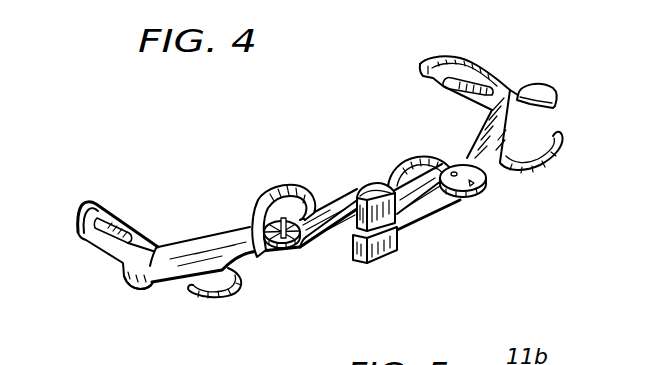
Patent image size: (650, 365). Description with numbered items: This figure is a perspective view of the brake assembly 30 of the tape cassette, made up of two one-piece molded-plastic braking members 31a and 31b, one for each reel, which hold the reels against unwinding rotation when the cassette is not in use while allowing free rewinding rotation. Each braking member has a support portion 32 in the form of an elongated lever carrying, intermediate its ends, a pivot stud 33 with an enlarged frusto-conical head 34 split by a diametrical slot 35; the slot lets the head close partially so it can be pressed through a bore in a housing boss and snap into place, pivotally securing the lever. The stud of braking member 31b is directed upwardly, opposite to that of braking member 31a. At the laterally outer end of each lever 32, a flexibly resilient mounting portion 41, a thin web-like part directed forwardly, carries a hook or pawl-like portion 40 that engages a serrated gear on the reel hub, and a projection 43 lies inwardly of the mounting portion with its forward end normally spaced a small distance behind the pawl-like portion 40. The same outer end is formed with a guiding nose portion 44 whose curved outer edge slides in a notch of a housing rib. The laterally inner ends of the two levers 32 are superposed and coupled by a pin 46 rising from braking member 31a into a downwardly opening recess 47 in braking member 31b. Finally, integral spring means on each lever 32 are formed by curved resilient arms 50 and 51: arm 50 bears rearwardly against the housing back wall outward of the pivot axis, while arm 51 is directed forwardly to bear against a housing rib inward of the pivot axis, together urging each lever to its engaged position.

The brake assembly 30 is at (429, 261).
The braking member 31a is at (523, 238).
The braking member 31b is at (267, 161).
The support portion 32 is at (230, 227).
The pivot stud 33 is at (270, 248).
The frusto-conical head 34 is at (309, 238).
The diametrical slot 35 is at (300, 203).
The pawl-like portion 40 is at (92, 200).
The flexibly resilient mounting portion 41 is at (84, 236).
The projection 43 is at (130, 221).
The guiding nose portion 44 is at (136, 290).
The pin 46 is at (375, 270).
The recess 47 is at (397, 223).
The curved resilient arm 50 is at (212, 300).
The curved resilient arm 51 is at (260, 186).